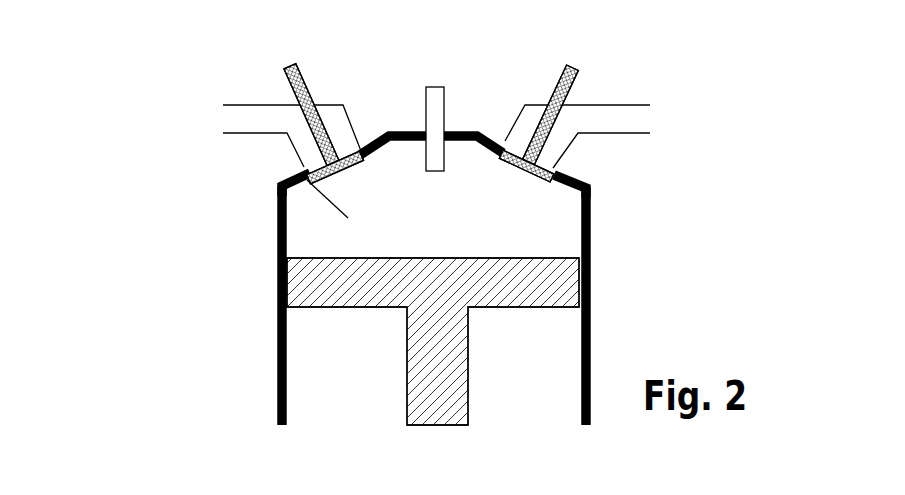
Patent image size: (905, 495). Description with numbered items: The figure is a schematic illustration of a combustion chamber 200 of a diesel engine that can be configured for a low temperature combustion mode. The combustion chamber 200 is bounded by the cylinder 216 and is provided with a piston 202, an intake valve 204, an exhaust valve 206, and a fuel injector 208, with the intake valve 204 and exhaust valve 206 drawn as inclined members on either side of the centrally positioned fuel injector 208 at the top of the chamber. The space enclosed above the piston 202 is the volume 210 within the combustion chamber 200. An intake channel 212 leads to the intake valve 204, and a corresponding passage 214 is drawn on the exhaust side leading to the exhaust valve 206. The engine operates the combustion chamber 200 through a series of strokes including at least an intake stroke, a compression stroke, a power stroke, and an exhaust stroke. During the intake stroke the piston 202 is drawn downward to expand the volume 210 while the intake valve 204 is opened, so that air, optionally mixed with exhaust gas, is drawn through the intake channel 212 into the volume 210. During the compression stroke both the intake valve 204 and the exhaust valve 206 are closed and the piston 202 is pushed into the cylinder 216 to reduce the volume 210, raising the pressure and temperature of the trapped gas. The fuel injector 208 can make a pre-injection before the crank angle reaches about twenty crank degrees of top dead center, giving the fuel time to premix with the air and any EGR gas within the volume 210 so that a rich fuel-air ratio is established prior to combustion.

The combustion chamber 200 is at (158, 119).
The piston 202 is at (553, 283).
The intake valve 204 is at (289, 71).
The exhaust valve 206 is at (578, 70).
The fuel injector 208 is at (441, 102).
The volume 210 is at (300, 177).
The intake channel 212 is at (241, 105).
The exhaust port 214 is at (627, 105).
The cylinder 216 is at (591, 216).